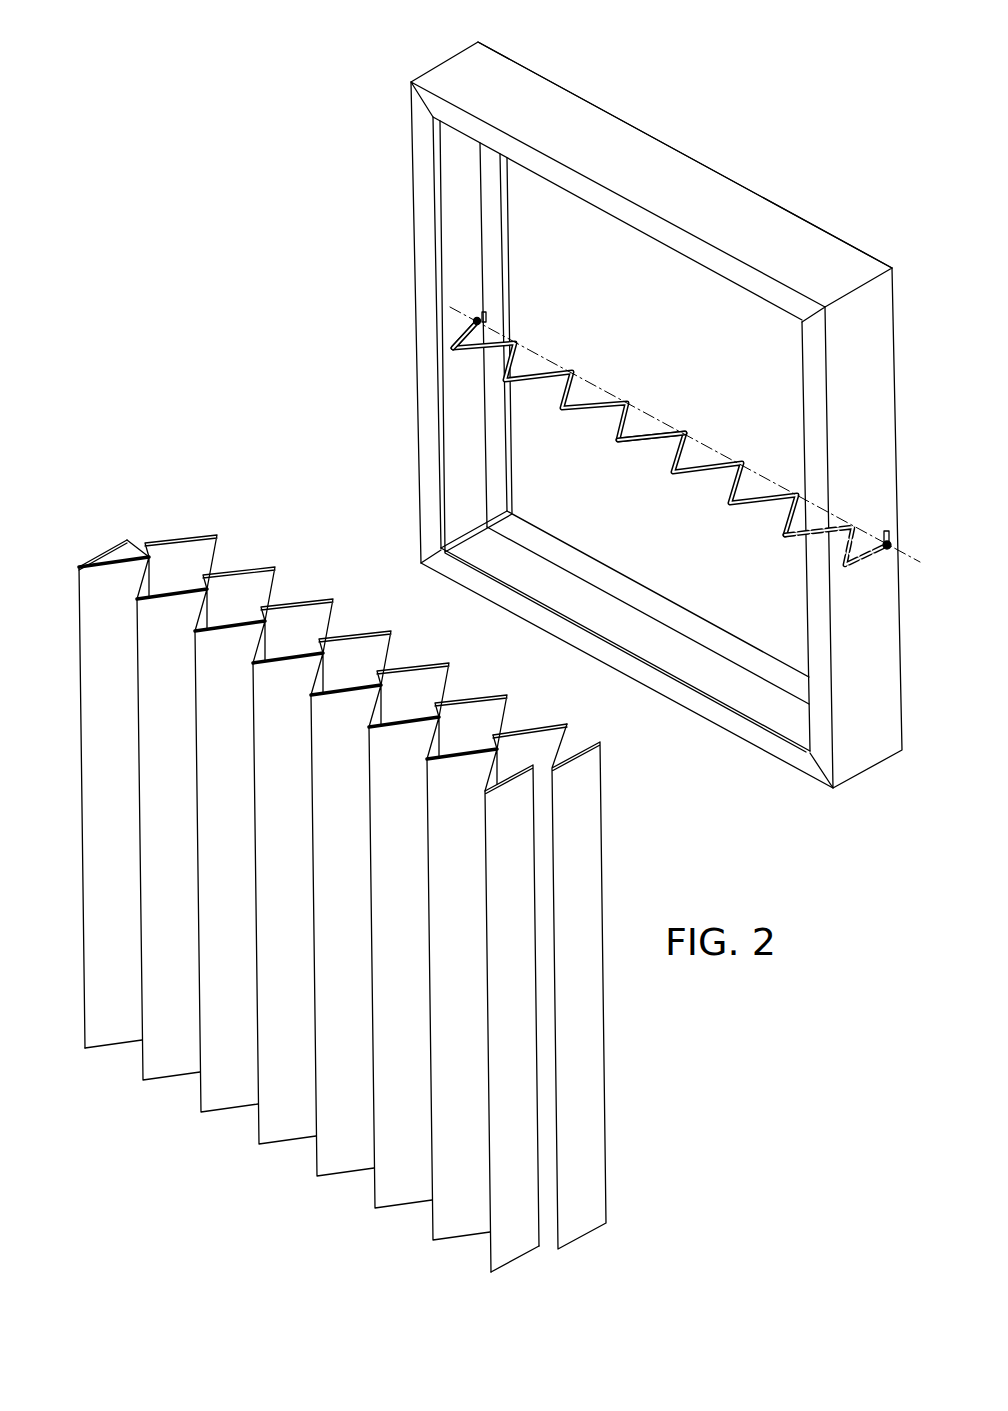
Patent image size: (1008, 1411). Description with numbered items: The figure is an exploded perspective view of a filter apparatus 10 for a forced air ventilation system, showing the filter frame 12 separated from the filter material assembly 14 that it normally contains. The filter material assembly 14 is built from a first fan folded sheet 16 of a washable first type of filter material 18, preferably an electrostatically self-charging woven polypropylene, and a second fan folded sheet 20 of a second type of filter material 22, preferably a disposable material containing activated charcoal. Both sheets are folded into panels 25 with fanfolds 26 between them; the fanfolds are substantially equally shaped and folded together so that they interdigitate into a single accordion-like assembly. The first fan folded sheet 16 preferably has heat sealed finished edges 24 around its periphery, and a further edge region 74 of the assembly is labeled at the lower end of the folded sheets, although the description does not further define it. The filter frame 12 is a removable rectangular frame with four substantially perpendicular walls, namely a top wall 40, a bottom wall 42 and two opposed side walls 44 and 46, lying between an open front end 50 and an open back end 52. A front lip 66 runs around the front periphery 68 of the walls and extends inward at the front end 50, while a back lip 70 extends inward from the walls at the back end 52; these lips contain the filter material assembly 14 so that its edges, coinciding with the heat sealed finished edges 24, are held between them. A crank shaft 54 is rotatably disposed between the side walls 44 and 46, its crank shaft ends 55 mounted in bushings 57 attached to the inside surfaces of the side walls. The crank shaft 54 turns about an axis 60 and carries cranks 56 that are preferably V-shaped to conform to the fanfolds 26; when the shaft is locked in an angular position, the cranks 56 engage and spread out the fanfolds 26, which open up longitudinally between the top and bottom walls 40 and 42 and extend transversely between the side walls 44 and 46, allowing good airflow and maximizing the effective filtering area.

The filter apparatus 10 is at (766, 125).
The filter frame 12 is at (448, 53).
The filter material assembly 14 is at (226, 1124).
The first fan folded sheet 16 is at (98, 556).
The first type of filter material 18 is at (118, 1048).
The second fan folded sheet 20 is at (235, 540).
The second type of filter material 22 is at (308, 617).
The heat sealed finished edges 24 is at (117, 562).
The panels 25 is at (106, 548).
The fanfolds 26 is at (334, 678).
The top wall 40 is at (628, 140).
The bottom wall 42 is at (766, 703).
The side wall 44 is at (868, 698).
The side wall 46 is at (463, 398).
The open front end 50 is at (480, 580).
The open back end 52 is at (690, 598).
The crank shaft 54 is at (665, 422).
The crank shaft ends 55 is at (482, 317).
The cranks 56 is at (613, 434).
The bushings 57 is at (477, 318).
The axis 60 is at (590, 372).
The front lip 66 is at (420, 137).
The front periphery 68 is at (688, 226).
The back lip 70 is at (605, 585).
The bottom edge of end panel 74 is at (515, 1266).